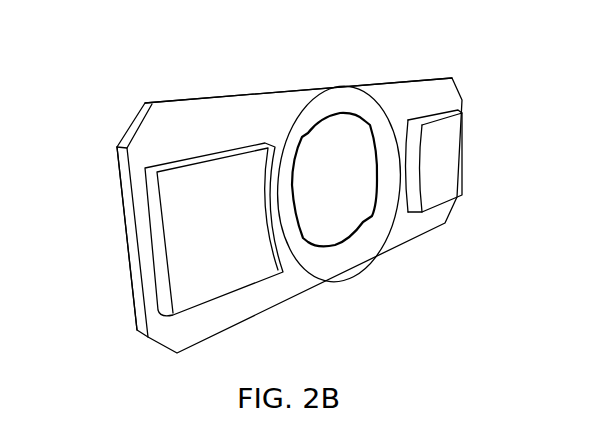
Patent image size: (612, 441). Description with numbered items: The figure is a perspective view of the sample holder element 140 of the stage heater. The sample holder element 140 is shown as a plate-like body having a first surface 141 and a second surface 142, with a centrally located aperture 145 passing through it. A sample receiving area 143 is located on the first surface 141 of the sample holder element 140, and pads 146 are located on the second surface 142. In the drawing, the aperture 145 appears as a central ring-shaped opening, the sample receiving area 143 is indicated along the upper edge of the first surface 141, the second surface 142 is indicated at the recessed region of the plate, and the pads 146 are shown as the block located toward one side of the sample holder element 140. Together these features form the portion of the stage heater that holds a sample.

The sample holder element 140 is at (134, 78).
The first surface 141 is at (118, 130).
The second surface 142 is at (145, 153).
The sample receiving area 143 is at (435, 77).
The aperture 145 is at (332, 228).
The pads 146 is at (452, 162).